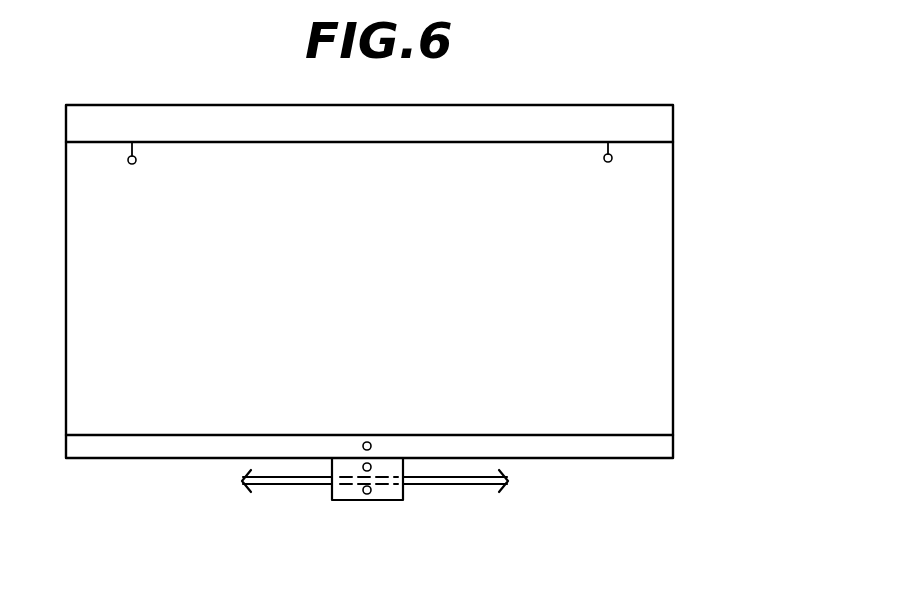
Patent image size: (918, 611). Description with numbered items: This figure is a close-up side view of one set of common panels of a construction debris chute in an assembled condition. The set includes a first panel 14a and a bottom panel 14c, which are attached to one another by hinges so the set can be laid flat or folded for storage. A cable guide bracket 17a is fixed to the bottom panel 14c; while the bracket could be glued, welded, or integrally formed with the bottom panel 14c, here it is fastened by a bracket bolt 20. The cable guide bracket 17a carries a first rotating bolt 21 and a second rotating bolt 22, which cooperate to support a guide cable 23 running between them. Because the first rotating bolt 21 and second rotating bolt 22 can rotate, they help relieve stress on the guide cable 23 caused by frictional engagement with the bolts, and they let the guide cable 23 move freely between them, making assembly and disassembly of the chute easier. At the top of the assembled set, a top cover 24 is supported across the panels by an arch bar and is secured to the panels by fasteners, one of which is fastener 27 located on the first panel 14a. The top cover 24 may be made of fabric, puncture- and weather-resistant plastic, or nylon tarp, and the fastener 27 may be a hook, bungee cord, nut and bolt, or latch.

The first panel 14a is at (673, 273).
The bottom panel 14c is at (140, 460).
The top cover 24 is at (482, 103).
The fastener 27 is at (135, 164).
The cable guide bracket 17a is at (385, 500).
The guide cable 23 is at (478, 488).
The bracket bolt 20 is at (363, 442).
The first rotating bolt 21 is at (372, 464).
The second rotating bolt 22 is at (362, 492).